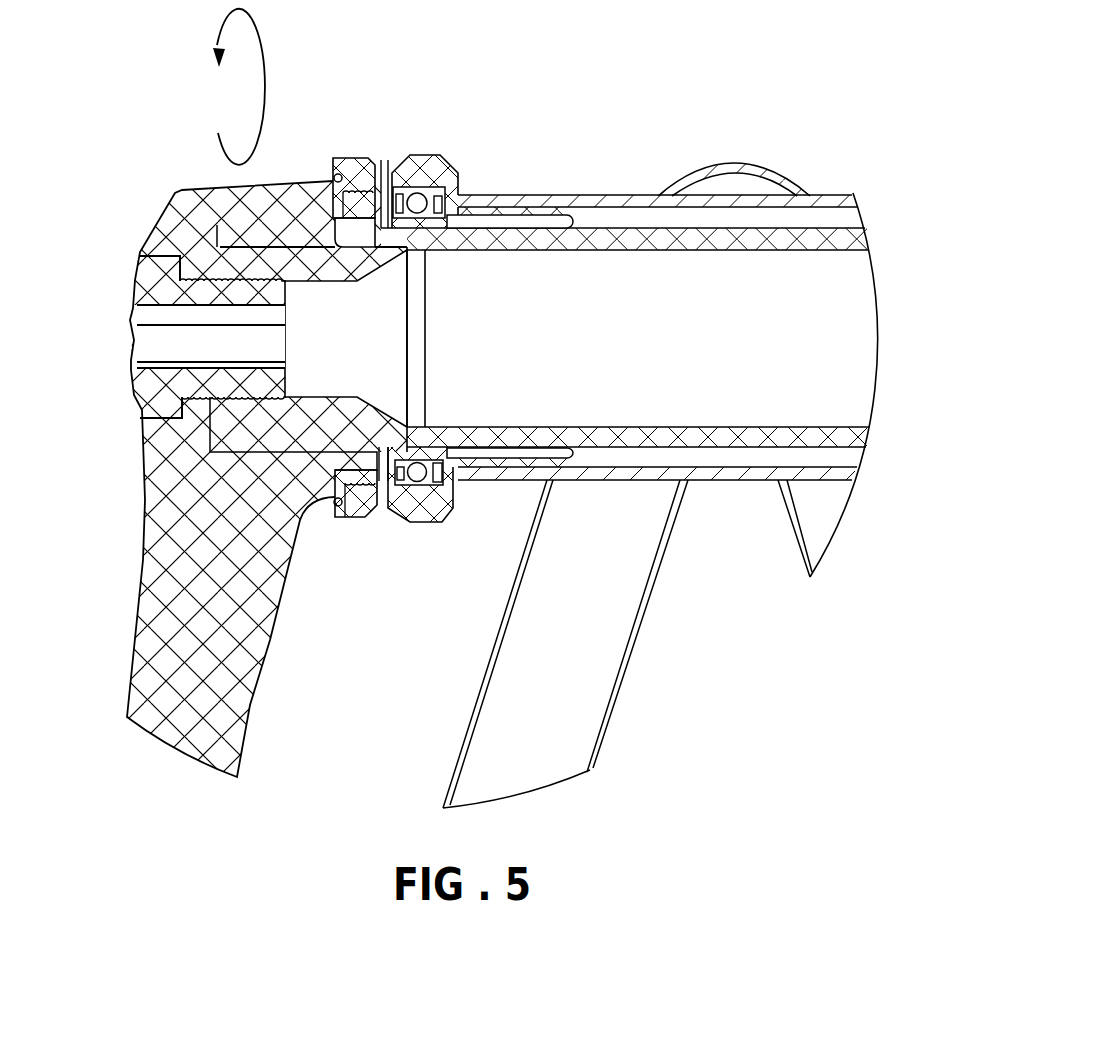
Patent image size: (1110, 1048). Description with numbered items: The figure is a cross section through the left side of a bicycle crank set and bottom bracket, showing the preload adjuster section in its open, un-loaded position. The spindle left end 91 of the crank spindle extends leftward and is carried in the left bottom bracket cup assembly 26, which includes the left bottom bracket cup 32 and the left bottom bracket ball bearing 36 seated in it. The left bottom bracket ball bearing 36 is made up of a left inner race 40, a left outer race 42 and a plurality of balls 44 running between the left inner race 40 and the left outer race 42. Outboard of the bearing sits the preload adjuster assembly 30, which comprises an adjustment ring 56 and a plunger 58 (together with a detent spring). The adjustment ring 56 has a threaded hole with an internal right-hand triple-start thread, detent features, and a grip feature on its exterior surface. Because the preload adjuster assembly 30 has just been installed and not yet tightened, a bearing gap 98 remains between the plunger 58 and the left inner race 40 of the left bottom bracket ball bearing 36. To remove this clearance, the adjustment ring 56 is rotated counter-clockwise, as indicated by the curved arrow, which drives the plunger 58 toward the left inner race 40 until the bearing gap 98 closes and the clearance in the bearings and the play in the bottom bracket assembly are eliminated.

The left bottom bracket cup assembly 26 is at (442, 148).
The preload adjuster assembly 30 is at (367, 157).
The left bottom bracket cup 32 is at (455, 193).
The left bottom bracket ball bearing 36 is at (440, 190).
The left inner race 40 is at (400, 200).
The left outer race 42 is at (419, 196).
The balls 44 is at (410, 210).
The adjustment ring 56 is at (382, 196).
The plunger 58 is at (352, 114).
The spindle left end 91 is at (222, 250).
The bearing gap 98 is at (380, 527).